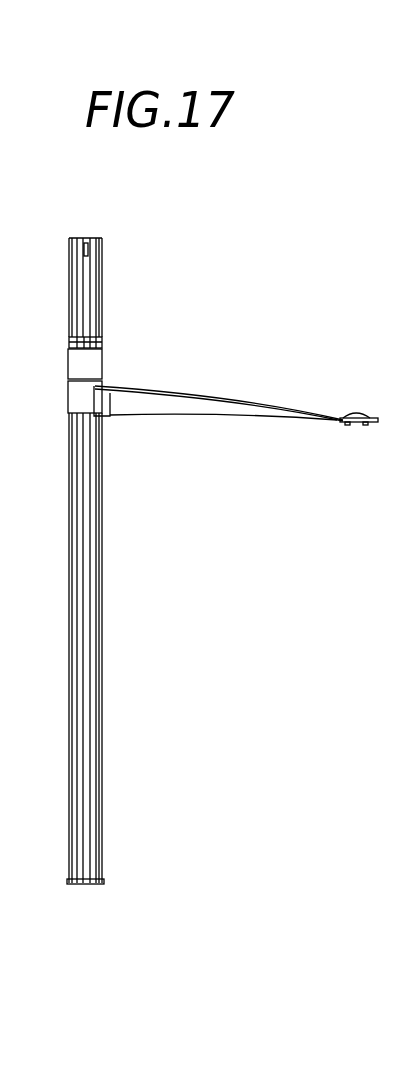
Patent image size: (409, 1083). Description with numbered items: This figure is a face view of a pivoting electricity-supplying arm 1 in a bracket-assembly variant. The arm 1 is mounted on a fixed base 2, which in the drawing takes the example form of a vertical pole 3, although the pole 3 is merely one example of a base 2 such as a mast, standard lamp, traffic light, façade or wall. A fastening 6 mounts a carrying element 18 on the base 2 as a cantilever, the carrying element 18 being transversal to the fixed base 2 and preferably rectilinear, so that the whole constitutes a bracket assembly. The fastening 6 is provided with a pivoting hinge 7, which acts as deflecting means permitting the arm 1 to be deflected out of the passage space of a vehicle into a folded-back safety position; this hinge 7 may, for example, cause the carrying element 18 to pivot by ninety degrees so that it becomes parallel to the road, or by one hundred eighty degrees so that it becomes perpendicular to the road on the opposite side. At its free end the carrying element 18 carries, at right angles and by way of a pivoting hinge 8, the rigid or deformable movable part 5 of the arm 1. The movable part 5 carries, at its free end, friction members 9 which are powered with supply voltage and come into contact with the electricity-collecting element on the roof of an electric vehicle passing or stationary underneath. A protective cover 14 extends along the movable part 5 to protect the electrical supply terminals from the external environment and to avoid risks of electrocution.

The pivoting electricity-supplying arm 1 is at (265, 288).
The base 2 is at (153, 561).
The pole 3 is at (127, 771).
The movable part 5 is at (199, 368).
The fastening 6 is at (63, 330).
The pivoting hinge 7 is at (110, 330).
The pivoting hinge 8 is at (106, 375).
The friction members 9 is at (344, 428).
The protective cover 14 is at (158, 402).
The carrying element 18 is at (61, 372).